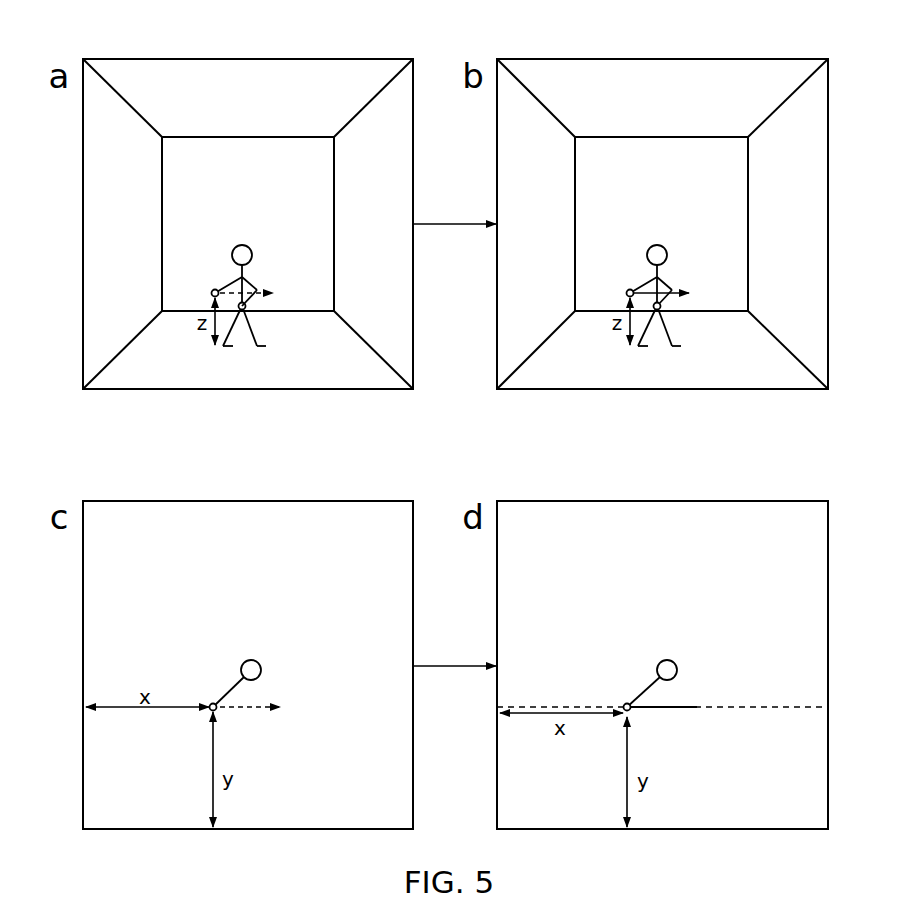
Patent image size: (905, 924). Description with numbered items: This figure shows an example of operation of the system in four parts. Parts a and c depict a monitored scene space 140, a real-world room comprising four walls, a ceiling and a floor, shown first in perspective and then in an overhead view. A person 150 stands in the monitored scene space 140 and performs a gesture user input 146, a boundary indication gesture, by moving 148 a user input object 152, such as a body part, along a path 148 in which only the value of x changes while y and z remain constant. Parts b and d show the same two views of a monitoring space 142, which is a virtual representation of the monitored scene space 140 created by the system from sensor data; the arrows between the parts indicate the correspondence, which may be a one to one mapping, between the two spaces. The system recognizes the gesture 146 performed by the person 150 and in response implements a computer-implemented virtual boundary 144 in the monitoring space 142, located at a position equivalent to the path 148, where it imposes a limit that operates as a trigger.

The monitored scene space 140 is at (308, 78).
The monitoring space 142 is at (723, 78).
The computer-implemented virtual boundary 144 is at (677, 295).
The gesture user input 146 is at (261, 295).
The path 148 is at (277, 281).
The person 150 is at (244, 247).
The user input object 152 is at (212, 291).